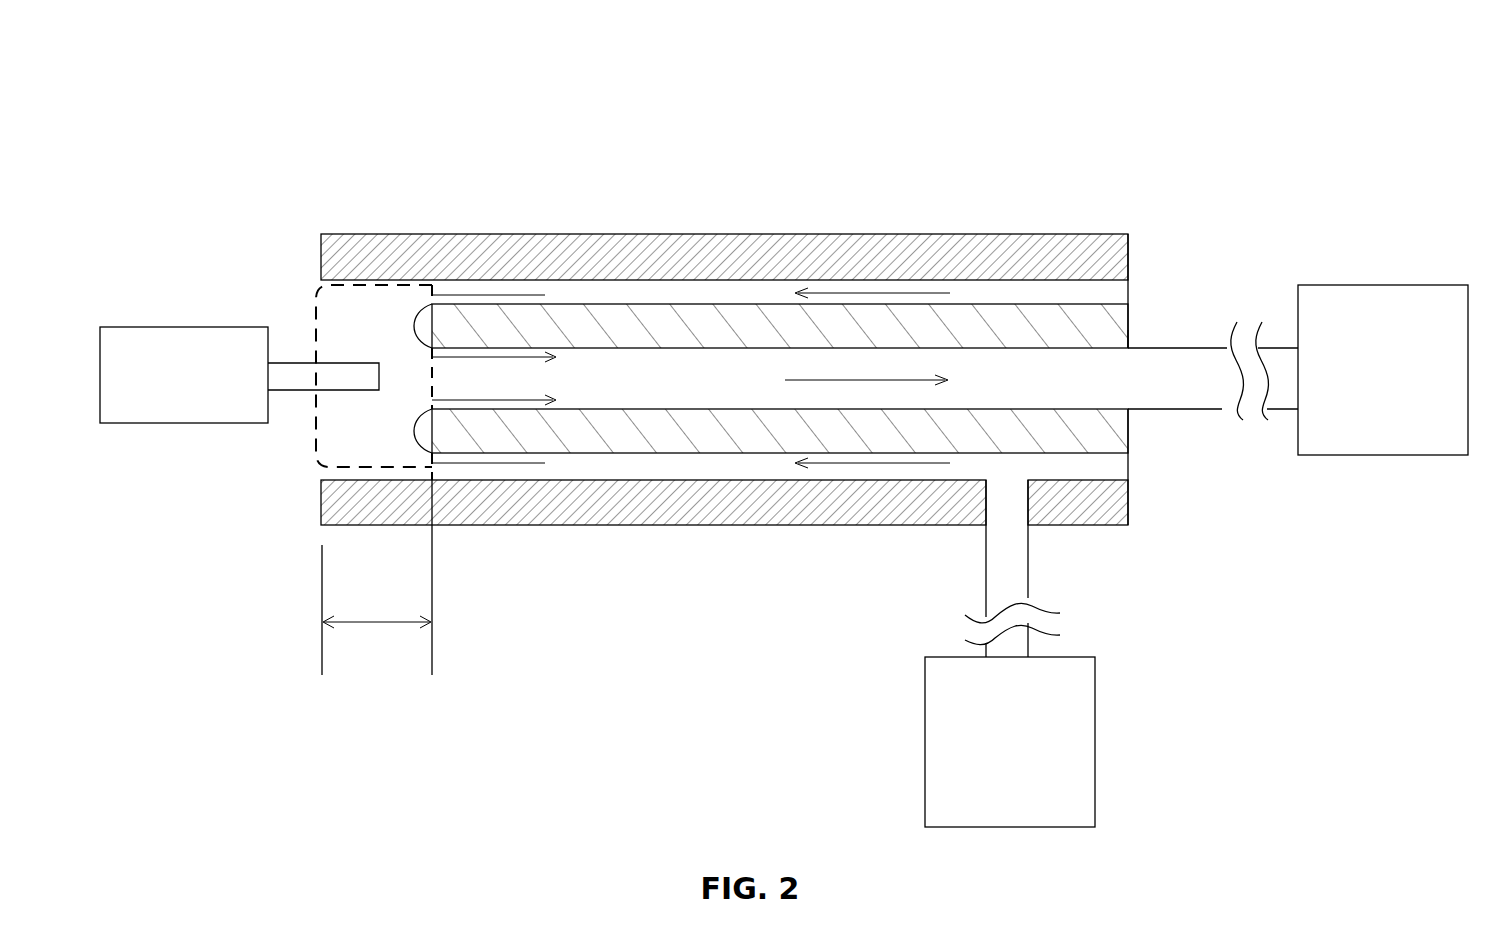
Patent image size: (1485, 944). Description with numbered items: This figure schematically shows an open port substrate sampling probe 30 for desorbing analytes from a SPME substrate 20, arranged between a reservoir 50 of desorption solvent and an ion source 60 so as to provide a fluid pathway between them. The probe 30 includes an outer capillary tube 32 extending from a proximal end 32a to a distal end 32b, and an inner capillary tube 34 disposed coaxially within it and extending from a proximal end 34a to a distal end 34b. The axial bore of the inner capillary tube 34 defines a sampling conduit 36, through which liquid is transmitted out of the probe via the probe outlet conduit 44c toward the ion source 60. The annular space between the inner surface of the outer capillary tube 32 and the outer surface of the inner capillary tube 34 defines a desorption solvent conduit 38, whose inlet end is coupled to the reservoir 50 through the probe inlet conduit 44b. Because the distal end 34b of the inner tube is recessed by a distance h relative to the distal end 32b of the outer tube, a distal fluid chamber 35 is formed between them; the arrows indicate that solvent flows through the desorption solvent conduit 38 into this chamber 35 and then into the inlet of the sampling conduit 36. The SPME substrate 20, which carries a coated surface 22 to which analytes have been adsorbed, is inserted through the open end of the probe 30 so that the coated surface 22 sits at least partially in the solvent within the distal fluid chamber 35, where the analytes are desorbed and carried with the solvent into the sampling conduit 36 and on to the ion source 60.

The SPME substrate 20 is at (170, 312).
The coated surface 22 is at (298, 389).
The substrate sampling probe 30 is at (462, 140).
The outer capillary tube 32 is at (930, 247).
The proximal end of outer capillary tube 32a is at (1130, 512).
The distal end of outer capillary tube 32b is at (320, 505).
The inner capillary tube 34 is at (677, 420).
The proximal end of inner capillary tube 34a is at (1128, 330).
The distal end of inner capillary tube 34b is at (432, 430).
The distal fluid chamber 35 is at (318, 298).
The sampling conduit 36 is at (723, 377).
The desorption solvent conduit 38 is at (1053, 292).
The probe inlet conduit 44b is at (1010, 552).
The probe outlet conduit 44c is at (1222, 410).
The reservoir 50 is at (1010, 742).
The ion source 60 is at (1383, 370).